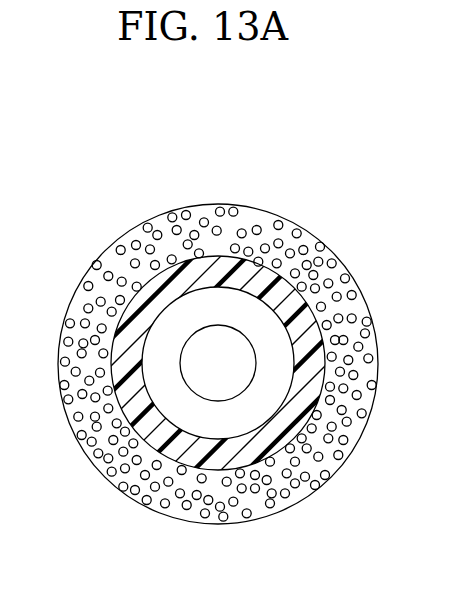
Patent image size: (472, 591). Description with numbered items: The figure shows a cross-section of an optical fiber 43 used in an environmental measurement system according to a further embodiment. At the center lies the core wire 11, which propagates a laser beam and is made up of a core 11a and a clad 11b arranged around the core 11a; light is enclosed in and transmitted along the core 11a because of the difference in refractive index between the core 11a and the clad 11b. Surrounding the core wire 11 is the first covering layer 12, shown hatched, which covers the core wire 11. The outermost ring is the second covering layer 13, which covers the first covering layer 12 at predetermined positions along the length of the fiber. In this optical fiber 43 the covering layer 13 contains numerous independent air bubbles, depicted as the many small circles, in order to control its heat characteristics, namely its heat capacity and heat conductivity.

The core wire 11 is at (293, 156).
The core 11a is at (212, 340).
The clad 11b is at (245, 305).
The first covering layer 12 is at (297, 305).
The second covering layer 13 is at (357, 303).
The optical fiber 43 is at (95, 246).